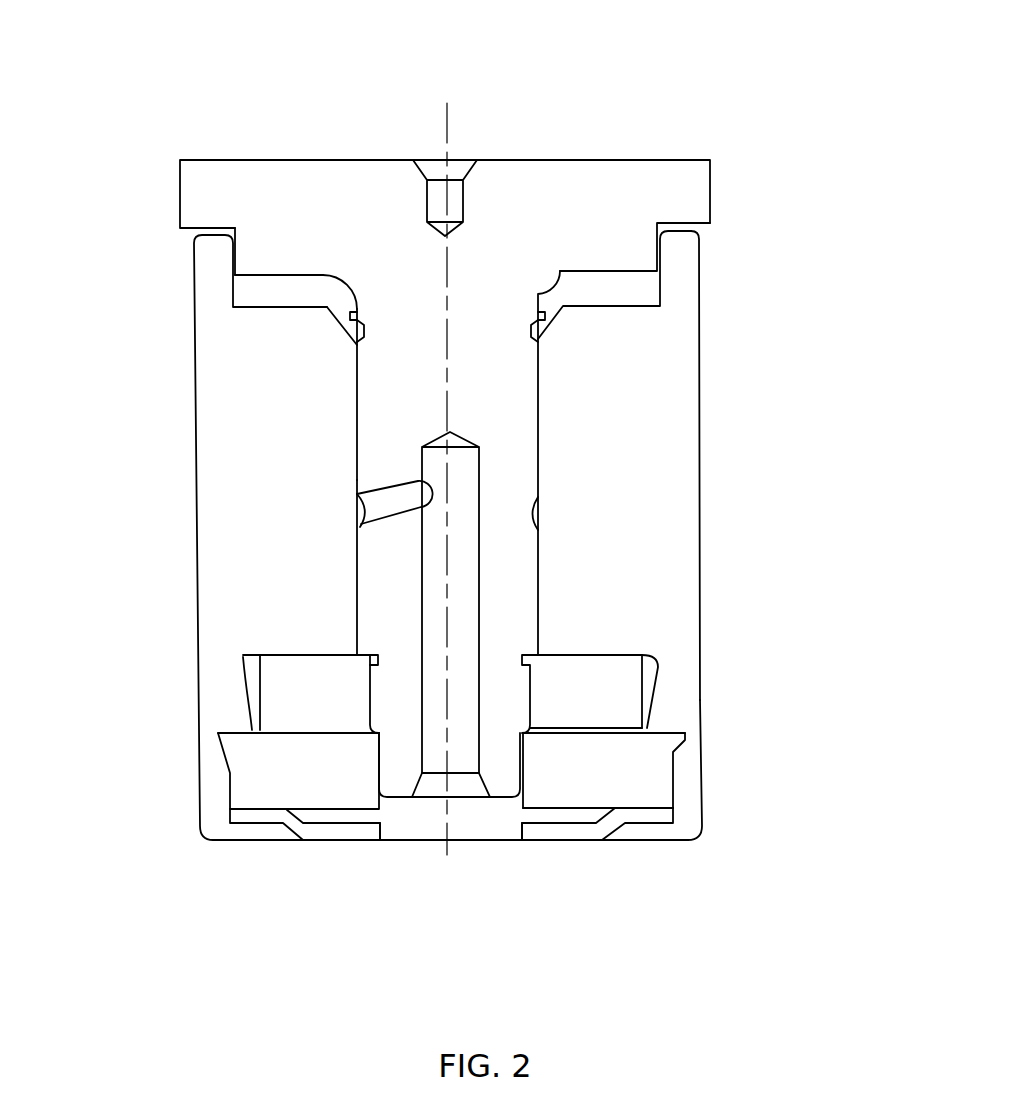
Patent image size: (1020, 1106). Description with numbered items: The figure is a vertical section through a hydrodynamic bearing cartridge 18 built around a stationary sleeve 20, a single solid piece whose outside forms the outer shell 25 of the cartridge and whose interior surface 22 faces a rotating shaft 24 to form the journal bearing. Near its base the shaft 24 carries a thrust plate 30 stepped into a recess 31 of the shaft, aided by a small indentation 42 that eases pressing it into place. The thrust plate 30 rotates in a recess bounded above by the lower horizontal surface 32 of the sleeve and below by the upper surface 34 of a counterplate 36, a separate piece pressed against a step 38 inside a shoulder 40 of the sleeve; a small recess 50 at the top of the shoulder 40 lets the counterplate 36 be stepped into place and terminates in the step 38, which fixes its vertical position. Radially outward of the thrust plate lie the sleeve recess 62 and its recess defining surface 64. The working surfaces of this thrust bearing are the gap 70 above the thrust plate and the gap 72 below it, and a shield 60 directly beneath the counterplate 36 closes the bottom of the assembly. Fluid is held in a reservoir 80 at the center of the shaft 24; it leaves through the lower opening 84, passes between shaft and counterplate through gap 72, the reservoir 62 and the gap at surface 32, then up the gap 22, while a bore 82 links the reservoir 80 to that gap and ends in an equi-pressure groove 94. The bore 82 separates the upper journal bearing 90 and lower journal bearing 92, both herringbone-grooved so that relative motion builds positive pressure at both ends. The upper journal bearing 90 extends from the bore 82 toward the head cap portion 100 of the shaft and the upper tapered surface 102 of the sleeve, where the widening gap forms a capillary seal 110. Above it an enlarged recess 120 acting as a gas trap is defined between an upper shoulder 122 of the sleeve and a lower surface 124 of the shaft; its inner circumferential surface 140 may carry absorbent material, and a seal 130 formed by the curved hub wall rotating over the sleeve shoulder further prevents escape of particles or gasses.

The cartridge 18 is at (762, 78).
The sleeve 20 is at (698, 480).
The interior surface (gap) 22 is at (538, 421).
The rotating shaft 24 is at (270, 175).
The outer shell 25 is at (700, 350).
The thrust plate 30 is at (660, 673).
The recess 31 is at (367, 687).
The lower horizontal surface 32 is at (608, 655).
The upper surface 34 is at (614, 735).
The counterplate 36 is at (567, 800).
The step 38 is at (642, 733).
The shoulder 40 is at (697, 772).
The indentation 42 is at (372, 677).
The recess 50 is at (218, 736).
The shield 60 is at (298, 840).
The sleeve recess (reservoir) 62 is at (650, 658).
The recess defining surface 64 is at (630, 692).
The gap 70 is at (277, 652).
The gap 72 is at (279, 752).
The reservoir 80 is at (441, 765).
The bore 82 is at (392, 502).
The lower opening 84 is at (437, 765).
The upper journal bearing 90 is at (335, 370).
The lower journal bearing 92 is at (345, 566).
The equi-pressure groove 94 is at (357, 517).
The head cap portion 100 is at (291, 209).
The upper tapered surface 102 is at (315, 326).
The capillary seal 110 is at (356, 305).
The enlarged recess (gas trap) 120 is at (300, 292).
The upper shoulder 122 is at (273, 307).
The lower surface 124 is at (260, 273).
The seal 130 is at (678, 223).
The circumferential surface 140 is at (662, 282).